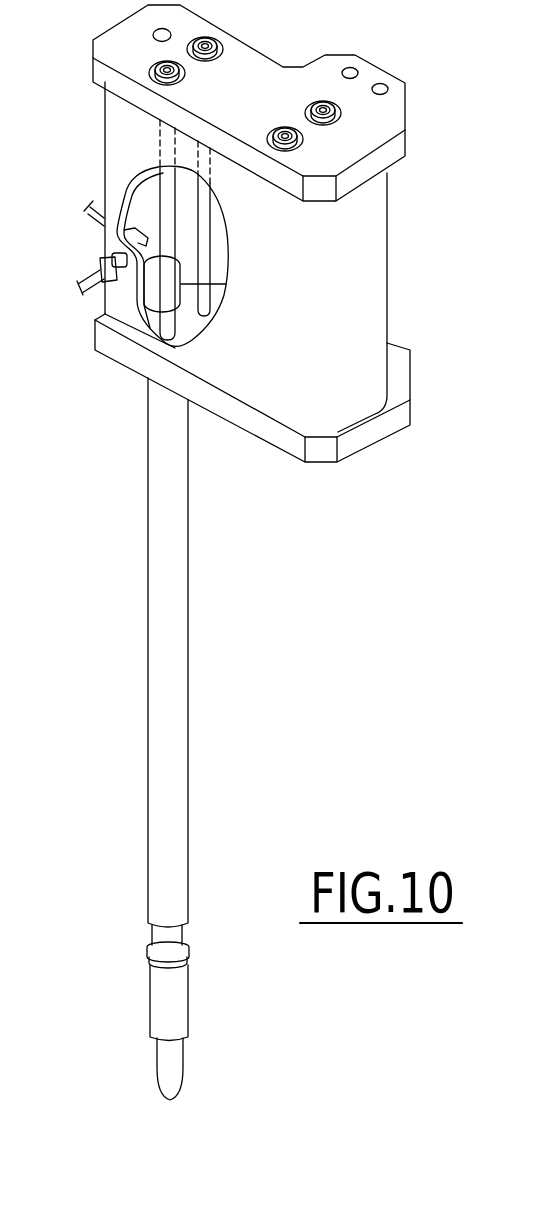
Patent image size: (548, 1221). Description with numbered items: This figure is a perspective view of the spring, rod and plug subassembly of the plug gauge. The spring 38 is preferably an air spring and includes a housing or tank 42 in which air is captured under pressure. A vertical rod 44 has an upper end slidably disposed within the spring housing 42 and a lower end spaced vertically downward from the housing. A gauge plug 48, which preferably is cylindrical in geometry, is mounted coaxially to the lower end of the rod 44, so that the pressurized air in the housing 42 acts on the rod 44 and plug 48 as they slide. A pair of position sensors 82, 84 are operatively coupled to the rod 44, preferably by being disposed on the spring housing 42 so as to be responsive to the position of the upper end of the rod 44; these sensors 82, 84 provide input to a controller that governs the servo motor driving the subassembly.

The spring 38 is at (393, 197).
The housing 42 is at (340, 292).
The vertical rod 44 is at (180, 640).
The gauge plug 48 is at (178, 1002).
The position sensor 82 is at (107, 297).
The position sensor 84 is at (112, 237).